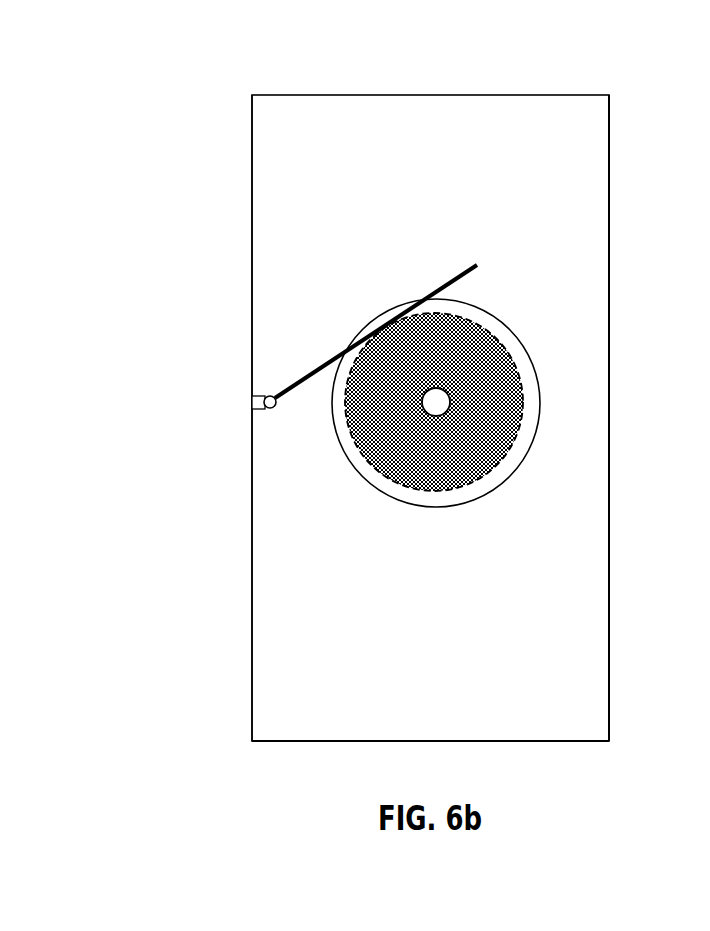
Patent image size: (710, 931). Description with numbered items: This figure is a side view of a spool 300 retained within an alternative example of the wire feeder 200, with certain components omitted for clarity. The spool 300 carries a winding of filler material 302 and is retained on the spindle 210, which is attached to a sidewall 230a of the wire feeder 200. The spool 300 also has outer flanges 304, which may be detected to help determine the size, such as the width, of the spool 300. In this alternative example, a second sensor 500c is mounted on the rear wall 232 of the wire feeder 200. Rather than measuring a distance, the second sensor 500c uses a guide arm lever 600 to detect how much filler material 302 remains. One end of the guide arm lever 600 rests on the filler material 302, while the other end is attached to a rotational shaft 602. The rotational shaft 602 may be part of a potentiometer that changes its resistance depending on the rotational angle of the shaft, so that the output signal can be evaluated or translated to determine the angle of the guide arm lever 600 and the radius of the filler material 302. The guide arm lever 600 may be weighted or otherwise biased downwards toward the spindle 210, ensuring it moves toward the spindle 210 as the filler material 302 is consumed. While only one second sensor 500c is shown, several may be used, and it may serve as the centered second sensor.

The wire feeder 200 is at (228, 103).
The rear wall 232 is at (250, 268).
The sidewall 230a is at (587, 590).
The spool 300 is at (441, 404).
The filler material 302 is at (477, 442).
The outer flanges 304 is at (410, 502).
The spindle 210 is at (450, 403).
The guide arm lever 600 is at (297, 367).
The rotational shaft 602 is at (267, 410).
The second sensor 500c is at (250, 400).